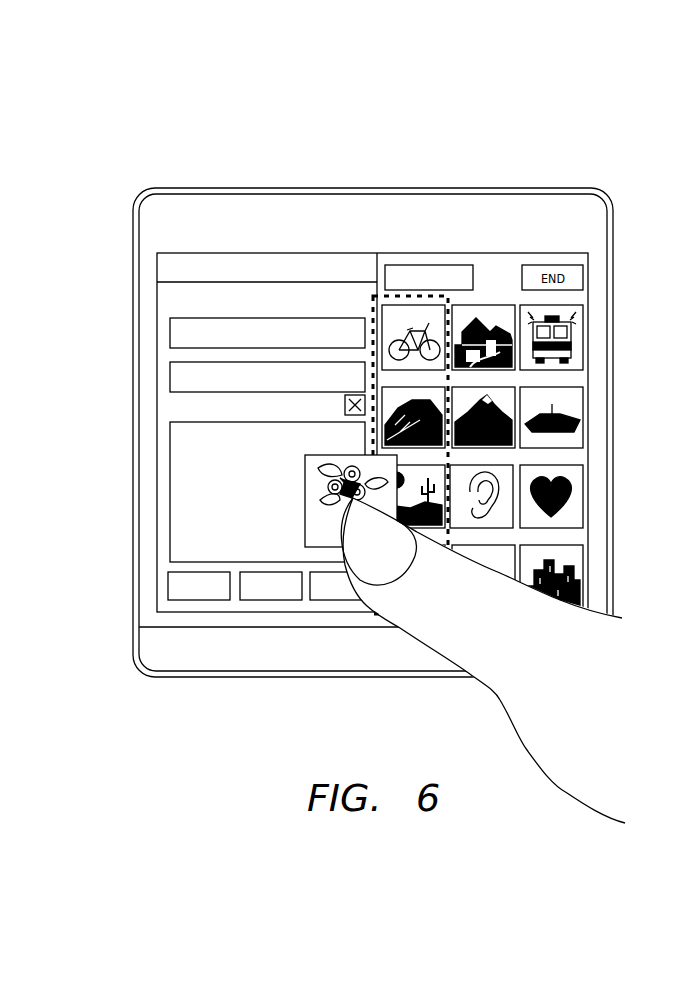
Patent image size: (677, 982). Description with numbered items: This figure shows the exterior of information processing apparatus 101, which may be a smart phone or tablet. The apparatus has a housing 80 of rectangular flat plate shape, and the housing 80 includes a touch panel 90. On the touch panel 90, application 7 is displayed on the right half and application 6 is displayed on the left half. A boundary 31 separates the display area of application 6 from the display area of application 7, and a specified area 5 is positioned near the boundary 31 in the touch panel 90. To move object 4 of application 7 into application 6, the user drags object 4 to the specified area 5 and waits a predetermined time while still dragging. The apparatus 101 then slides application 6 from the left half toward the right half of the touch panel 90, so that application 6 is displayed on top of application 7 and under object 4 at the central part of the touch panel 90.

The information processing apparatus 101 is at (374, 365).
The housing 80 is at (534, 118).
The application 6 is at (157, 407).
The touch panel 90 is at (157, 360).
The boundary 31 is at (377, 257).
The specified area 5 is at (440, 297).
The application 7 is at (588, 452).
The object 4 is at (320, 503).